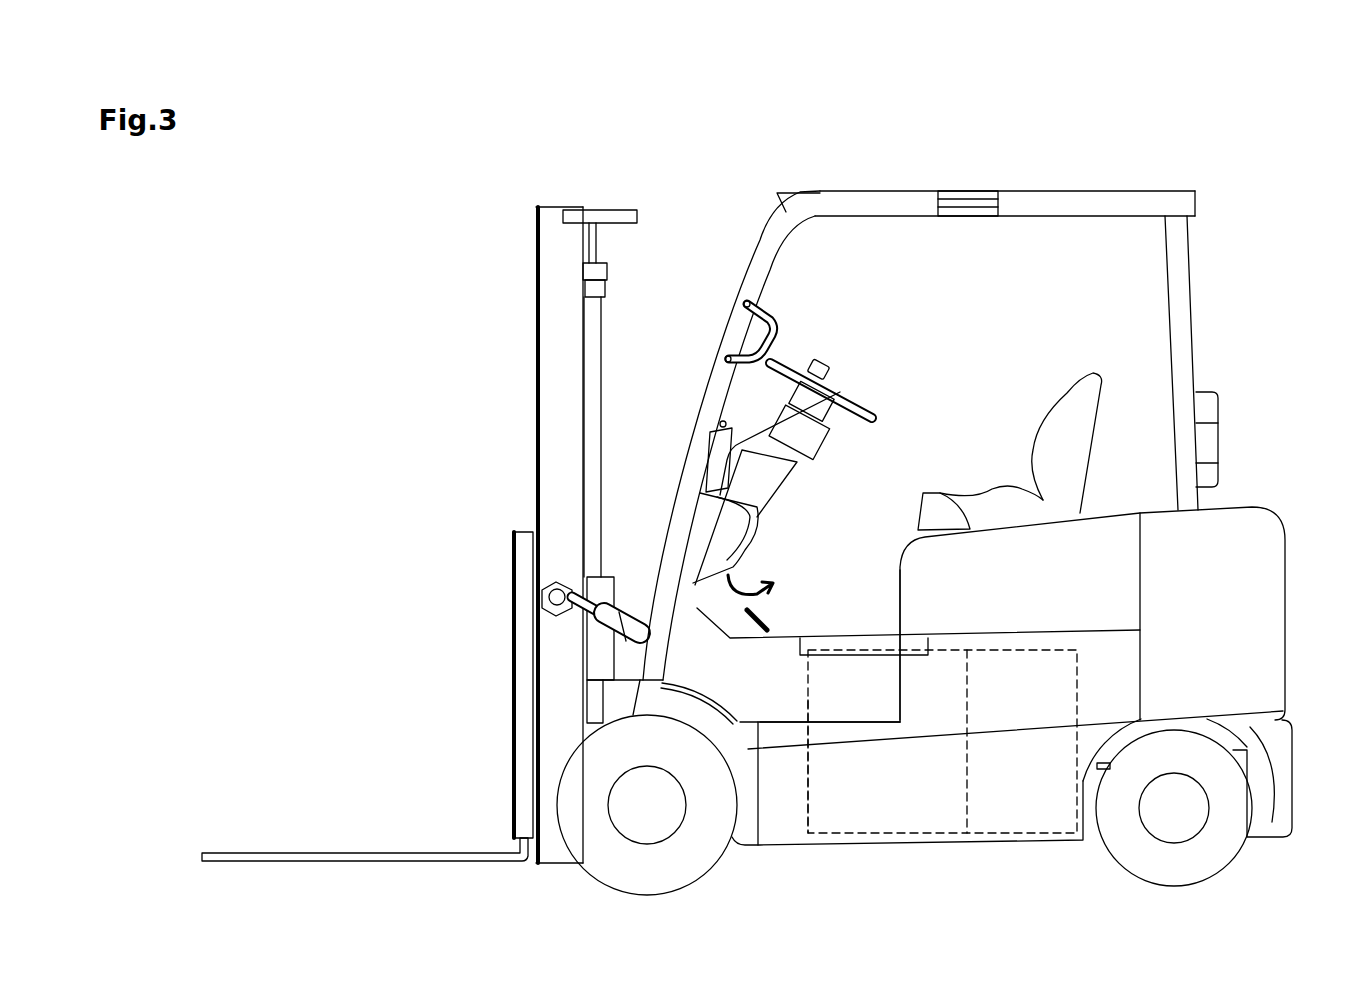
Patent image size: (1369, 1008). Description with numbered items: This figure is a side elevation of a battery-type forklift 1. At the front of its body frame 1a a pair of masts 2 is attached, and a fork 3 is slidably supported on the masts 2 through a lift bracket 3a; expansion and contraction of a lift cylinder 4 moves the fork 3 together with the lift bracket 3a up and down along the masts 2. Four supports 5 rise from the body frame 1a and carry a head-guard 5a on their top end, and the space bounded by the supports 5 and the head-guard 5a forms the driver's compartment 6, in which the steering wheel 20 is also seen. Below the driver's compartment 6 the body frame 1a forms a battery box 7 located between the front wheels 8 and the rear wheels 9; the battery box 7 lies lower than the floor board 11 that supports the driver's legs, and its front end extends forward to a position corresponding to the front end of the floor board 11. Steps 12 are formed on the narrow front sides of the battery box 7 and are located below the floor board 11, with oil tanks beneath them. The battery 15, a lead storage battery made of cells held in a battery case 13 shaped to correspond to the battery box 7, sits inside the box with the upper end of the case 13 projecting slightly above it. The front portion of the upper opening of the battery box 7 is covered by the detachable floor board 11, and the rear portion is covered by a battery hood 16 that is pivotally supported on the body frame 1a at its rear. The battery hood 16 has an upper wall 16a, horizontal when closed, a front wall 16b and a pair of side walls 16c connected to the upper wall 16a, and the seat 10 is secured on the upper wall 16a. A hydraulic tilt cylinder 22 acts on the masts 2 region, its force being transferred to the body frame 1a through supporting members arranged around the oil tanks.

The battery-type forklift 1 is at (987, 601).
The body frame 1a is at (776, 840).
The masts 2 is at (545, 417).
The fork 3 is at (420, 853).
The lift bracket 3a is at (520, 636).
The lift cylinder 4 is at (597, 388).
The supports 5 is at (747, 285).
The head-guard 5a is at (1028, 197).
The driver's compartment 6 is at (900, 262).
The battery box 7 is at (808, 808).
The front wheels 8 is at (598, 867).
The rear wheels 9 is at (1224, 849).
The seat 10 is at (1000, 487).
The floor board 11 is at (850, 640).
The steps 12 is at (862, 714).
The battery case 13 is at (1002, 838).
The battery 15 is at (1082, 686).
The battery hood 16 is at (1050, 577).
The upper wall 16a is at (945, 493).
The front wall 16b is at (897, 568).
The side walls 16c is at (1141, 571).
The steering wheel 20 is at (866, 404).
The hydraulic tilt cylinder 22 is at (637, 607).